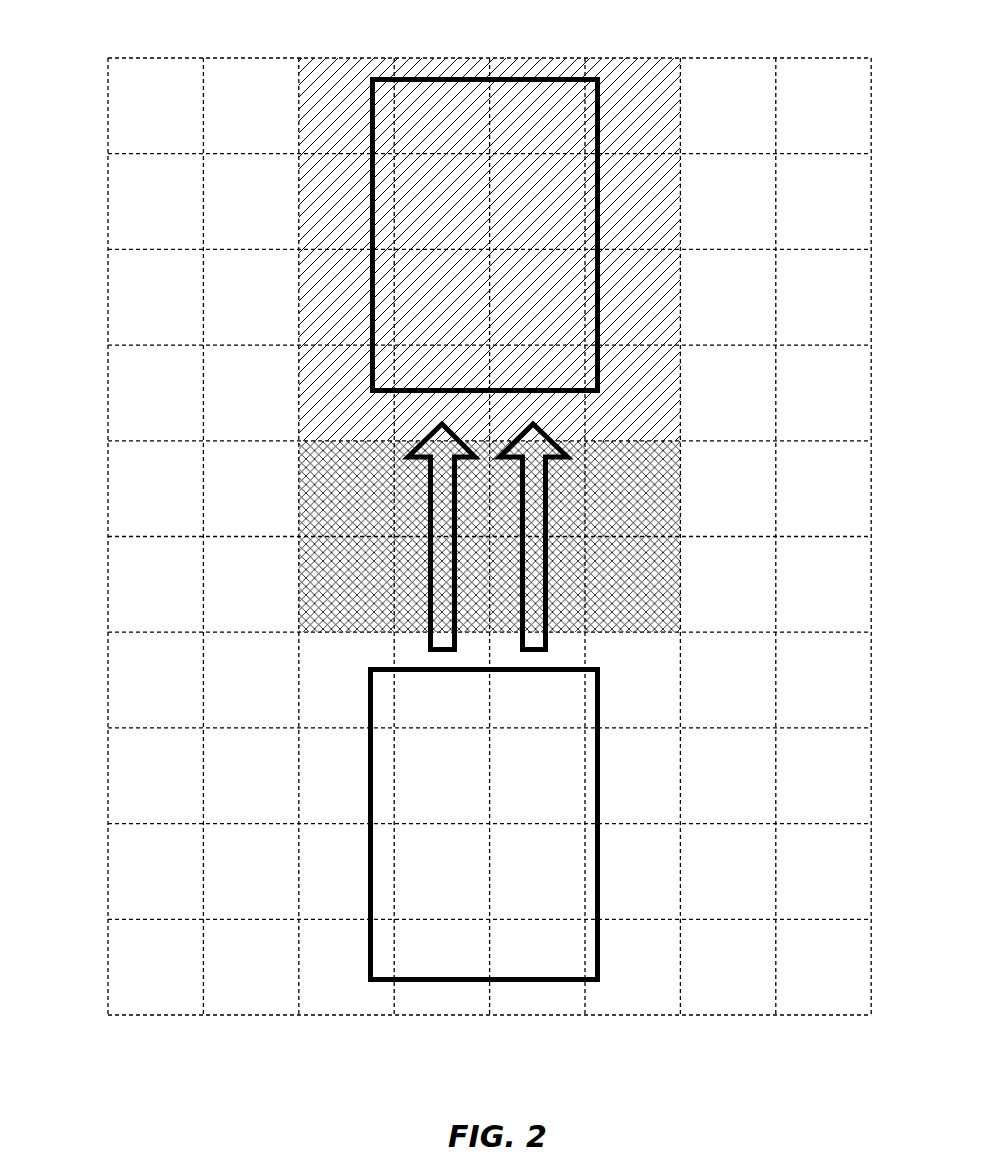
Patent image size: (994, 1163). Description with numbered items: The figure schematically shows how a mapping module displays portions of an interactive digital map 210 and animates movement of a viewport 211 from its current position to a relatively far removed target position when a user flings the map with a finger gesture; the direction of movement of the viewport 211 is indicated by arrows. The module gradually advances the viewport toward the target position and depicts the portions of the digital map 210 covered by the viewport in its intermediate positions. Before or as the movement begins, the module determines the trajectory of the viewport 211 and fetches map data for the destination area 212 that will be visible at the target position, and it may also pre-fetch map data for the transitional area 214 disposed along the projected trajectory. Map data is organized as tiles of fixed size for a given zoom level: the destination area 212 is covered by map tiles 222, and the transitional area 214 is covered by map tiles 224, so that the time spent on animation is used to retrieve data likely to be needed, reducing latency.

The interactive digital map 210 is at (175, 58).
The viewport 211 is at (446, 536).
The destination area 212 is at (420, 176).
The transitional area 214 is at (400, 530).
The map tiles 222 is at (647, 78).
The map tiles 224 is at (318, 470).